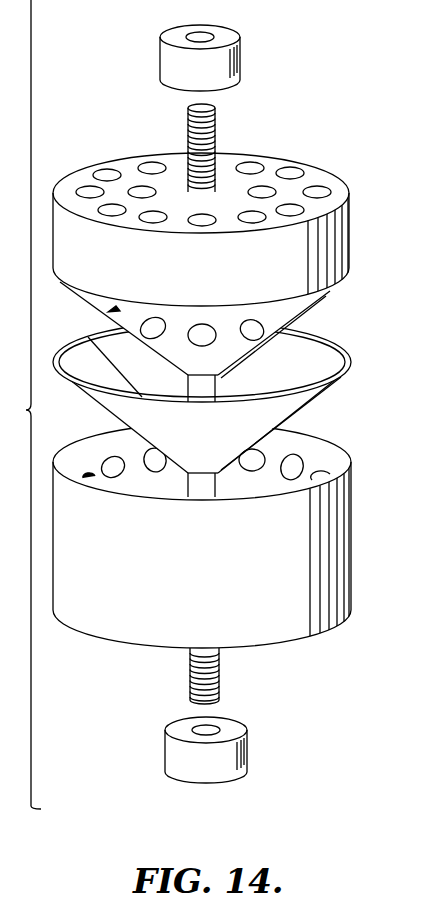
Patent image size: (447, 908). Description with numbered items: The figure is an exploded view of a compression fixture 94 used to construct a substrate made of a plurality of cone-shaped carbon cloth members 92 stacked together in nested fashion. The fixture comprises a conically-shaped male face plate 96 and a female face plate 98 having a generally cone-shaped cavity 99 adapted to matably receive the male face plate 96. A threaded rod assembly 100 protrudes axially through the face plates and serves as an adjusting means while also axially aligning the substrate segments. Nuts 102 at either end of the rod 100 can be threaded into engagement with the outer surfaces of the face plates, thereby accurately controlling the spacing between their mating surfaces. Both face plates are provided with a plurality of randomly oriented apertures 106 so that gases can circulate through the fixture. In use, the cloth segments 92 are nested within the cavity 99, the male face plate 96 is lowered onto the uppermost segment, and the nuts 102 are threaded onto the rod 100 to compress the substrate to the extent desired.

The cone-shaped carbon cloth member 92 is at (352, 359).
The compression fixture 94 is at (233, 303).
The conically-shaped male face plate 96 is at (308, 305).
The female face plate 98 is at (225, 533).
The cone-shaped cavity 99 is at (326, 444).
The threaded rod assembly 100 is at (218, 125).
The nut 102 is at (246, 68).
The randomly oriented aperture 106 is at (262, 192).